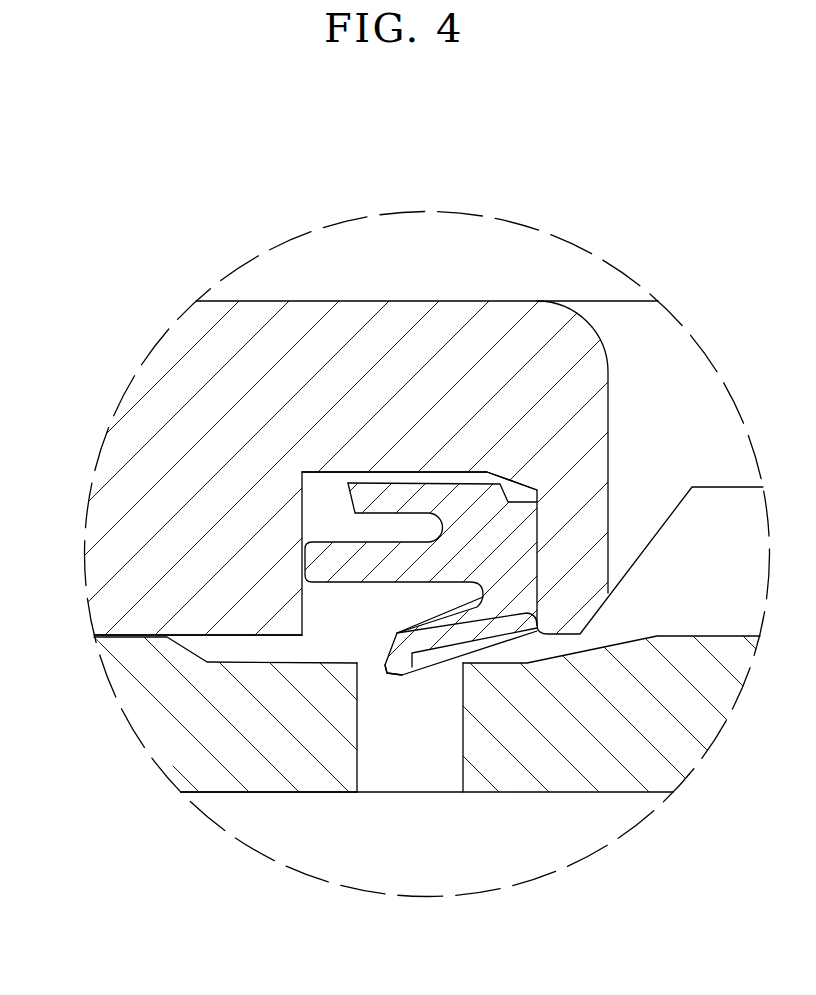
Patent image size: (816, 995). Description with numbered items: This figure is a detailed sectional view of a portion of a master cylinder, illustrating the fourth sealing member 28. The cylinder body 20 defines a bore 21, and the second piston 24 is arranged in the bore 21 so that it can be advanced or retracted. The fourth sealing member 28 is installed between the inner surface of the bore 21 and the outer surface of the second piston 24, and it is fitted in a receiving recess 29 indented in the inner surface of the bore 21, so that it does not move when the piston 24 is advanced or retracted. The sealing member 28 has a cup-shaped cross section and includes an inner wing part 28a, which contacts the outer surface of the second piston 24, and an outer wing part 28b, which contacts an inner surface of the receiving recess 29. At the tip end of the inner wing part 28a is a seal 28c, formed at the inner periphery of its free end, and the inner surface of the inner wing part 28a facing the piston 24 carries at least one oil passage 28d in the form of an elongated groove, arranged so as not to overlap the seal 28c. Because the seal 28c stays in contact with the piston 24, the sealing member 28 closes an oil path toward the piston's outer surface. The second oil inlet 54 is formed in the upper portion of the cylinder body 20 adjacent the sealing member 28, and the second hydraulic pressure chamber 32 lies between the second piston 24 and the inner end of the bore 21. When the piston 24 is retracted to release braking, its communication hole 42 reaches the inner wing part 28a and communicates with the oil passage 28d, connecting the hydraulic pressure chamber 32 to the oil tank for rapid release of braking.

The cylinder body 20 is at (218, 343).
The bore 21 is at (255, 635).
The second piston 24 is at (178, 764).
The fourth sealing member 28 is at (408, 497).
The inner wing part 28a is at (430, 617).
The outer wing part 28b is at (375, 473).
The seal 28c is at (402, 712).
The oil passage 28d is at (463, 647).
The receiving recess 29 is at (313, 473).
The second hydraulic pressure chamber 32 is at (272, 828).
The communication hole 42 is at (358, 765).
The second oil inlet 54 is at (609, 457).